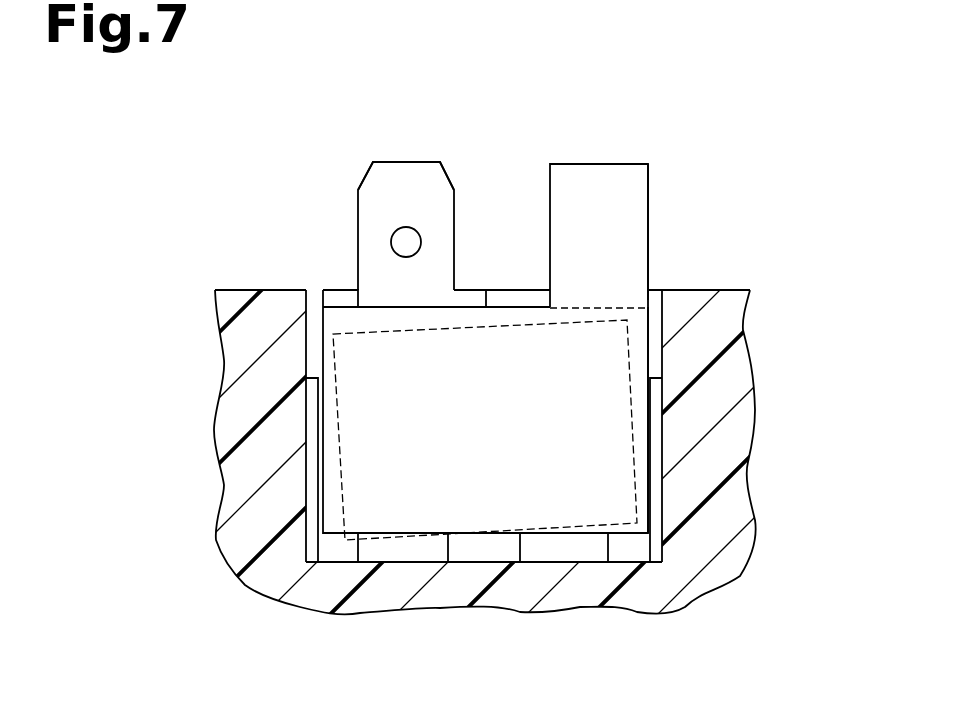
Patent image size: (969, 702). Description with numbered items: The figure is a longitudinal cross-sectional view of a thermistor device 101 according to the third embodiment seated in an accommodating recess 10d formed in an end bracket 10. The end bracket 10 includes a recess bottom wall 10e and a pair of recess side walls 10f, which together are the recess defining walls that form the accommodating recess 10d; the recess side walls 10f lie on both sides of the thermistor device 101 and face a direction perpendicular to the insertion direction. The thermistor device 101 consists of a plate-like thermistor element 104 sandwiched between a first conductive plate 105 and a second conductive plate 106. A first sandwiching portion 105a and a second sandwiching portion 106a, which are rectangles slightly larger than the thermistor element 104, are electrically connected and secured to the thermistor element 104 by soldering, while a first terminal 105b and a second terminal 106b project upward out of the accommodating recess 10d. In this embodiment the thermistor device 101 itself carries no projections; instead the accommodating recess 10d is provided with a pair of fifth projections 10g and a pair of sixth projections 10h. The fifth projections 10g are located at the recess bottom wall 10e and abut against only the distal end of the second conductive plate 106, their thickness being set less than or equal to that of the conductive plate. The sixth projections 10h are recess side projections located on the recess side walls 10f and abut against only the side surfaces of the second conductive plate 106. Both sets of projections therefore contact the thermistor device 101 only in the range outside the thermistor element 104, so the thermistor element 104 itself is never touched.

The end bracket 10 is at (737, 291).
The accommodating recess 10d is at (639, 562).
The recess bottom wall 10e is at (584, 562).
The recess side walls 10f is at (306, 452).
The fifth projections 10g is at (530, 547).
The sixth projections 10h is at (312, 502).
The thermistor device 101 is at (648, 203).
The thermistor element 104 is at (503, 323).
The first conductive plate 105 is at (648, 248).
The first sandwiching portion 105a is at (340, 304).
The first terminal 105b is at (600, 164).
The second conductive plate 106 is at (468, 290).
The second sandwiching portion 106a is at (588, 308).
The second terminal 106b is at (407, 162).